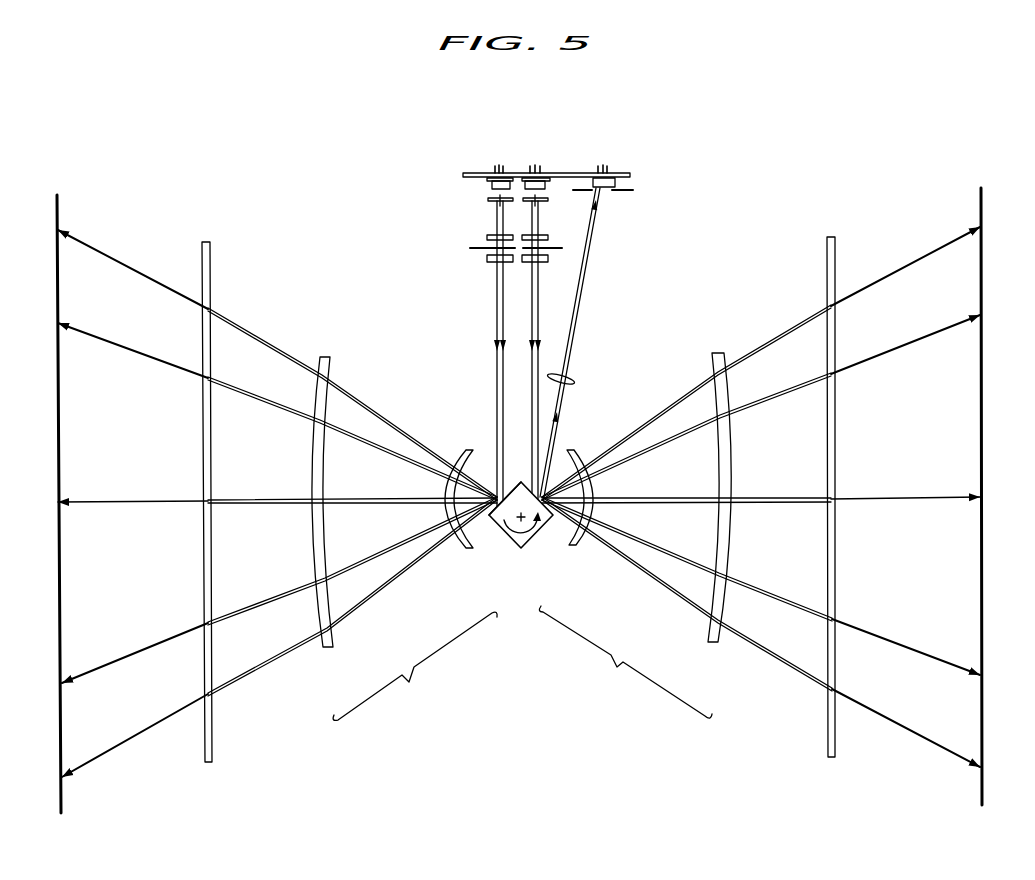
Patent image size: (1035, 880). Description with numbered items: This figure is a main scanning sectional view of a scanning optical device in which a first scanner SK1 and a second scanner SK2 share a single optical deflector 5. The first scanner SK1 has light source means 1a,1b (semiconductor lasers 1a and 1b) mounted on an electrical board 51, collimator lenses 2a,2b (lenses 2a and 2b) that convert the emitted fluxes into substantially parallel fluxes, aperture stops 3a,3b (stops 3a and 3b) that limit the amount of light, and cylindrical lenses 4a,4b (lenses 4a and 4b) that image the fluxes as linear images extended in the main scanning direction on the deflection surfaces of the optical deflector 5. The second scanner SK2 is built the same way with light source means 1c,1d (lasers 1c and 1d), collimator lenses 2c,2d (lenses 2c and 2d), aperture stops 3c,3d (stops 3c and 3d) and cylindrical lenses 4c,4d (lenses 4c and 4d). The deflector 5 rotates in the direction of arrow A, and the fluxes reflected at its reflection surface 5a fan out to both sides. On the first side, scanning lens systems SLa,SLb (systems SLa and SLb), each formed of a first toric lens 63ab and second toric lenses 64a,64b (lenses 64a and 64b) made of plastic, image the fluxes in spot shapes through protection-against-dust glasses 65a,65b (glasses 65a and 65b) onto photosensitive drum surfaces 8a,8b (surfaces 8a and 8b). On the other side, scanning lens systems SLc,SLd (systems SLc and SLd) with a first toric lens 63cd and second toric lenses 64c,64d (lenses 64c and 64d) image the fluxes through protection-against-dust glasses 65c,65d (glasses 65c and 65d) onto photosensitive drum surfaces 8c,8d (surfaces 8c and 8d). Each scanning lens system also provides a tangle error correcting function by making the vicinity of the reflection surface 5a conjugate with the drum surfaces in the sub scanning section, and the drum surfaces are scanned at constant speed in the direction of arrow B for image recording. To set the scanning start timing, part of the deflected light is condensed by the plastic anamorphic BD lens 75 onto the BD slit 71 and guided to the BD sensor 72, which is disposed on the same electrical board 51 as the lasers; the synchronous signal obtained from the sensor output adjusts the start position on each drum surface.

The light source means 1a,1b is at (550, 157).
The light source means 1a is at (550, 157).
The light source means 1b is at (548, 172).
The light source means 1c,1d is at (470, 159).
The light source means 1c is at (470, 159).
The light source means 1d is at (492, 173).
The collimator lenses 2a,2b is at (599, 224).
The collimator lens 2a is at (599, 224).
The collimator lens 2b is at (548, 238).
The collimator lenses 2c,2d is at (452, 225).
The collimator lens 2c is at (452, 225).
The collimator lens 2d is at (487, 238).
The aperture stops 3a,3b is at (600, 256).
The aperture stop 3a is at (600, 256).
The aperture stop 3b is at (562, 248).
The aperture stops 3c,3d is at (447, 259).
The aperture stop 3c is at (447, 259).
The aperture stop 3d is at (470, 248).
The cylindrical lenses 4a,4b is at (599, 277).
The cylindrical lens 4a is at (599, 277).
The cylindrical lens 4b is at (548, 262).
The cylindrical lenses 4c,4d is at (449, 282).
The cylindrical lens 4c is at (449, 282).
The cylindrical lens 4d is at (490, 262).
The optical deflector 5 is at (512, 494).
The reflection surface 5a is at (524, 480).
The rotation direction arrow A is at (507, 536).
The main scanning direction arrow B is at (40, 233).
The electrical board 51 is at (628, 173).
The BD slit 71 is at (633, 190).
The BD sensor 72 is at (604, 172).
The BD lens 75 is at (577, 380).
The first toric lens 63ab is at (577, 548).
The first toric lens 63cd is at (470, 552).
The second toric lenses 64a,64b is at (734, 528).
The second toric lens 64a is at (734, 528).
The second toric lens 64b is at (713, 643).
The second toric lenses 64c,64d is at (313, 532).
The second toric lens 64c is at (313, 532).
The second toric lens 64d is at (328, 648).
The protection-against-dust glasses 65a,65b is at (775, 514).
The protection-against-dust glass 65a is at (775, 514).
The protection-against-dust glass 65b is at (831, 757).
The protection-against-dust glasses 65c,65d is at (265, 518).
The protection-against-dust glass 65c is at (265, 518).
The protection-against-dust glass 65d is at (212, 760).
The photosensitive drum surfaces 8a,8b is at (937, 507).
The photosensitive drum surface 8a is at (937, 507).
The photosensitive drum surface 8b is at (982, 790).
The photosensitive drum surfaces 8c,8d is at (104, 515).
The photosensitive drum surface 8c is at (104, 515).
The photosensitive drum surface 8d is at (62, 798).
The first scanner SK1 is at (757, 180).
The second scanner SK2 is at (262, 185).
The scanning lens systems SLa,SLb is at (625, 662).
The scanning lens system SLa is at (625, 662).
The scanning lens system SLb is at (625, 662).
The scanning lens systems SLc,SLd is at (415, 666).
The scanning lens system SLc is at (415, 666).
The scanning lens system SLd is at (415, 666).